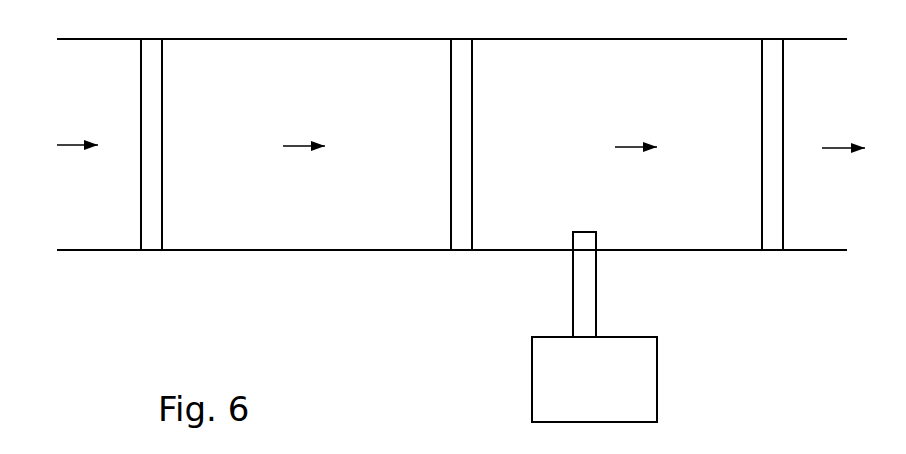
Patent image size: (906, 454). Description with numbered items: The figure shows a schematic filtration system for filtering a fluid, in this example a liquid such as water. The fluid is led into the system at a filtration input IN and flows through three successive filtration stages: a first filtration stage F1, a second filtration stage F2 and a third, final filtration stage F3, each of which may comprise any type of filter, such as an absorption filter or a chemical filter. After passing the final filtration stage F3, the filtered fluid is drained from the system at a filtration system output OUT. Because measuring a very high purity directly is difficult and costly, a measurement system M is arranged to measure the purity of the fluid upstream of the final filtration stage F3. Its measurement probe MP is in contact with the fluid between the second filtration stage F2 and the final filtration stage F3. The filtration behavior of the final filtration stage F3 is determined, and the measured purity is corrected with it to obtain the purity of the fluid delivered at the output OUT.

The filtration input IN is at (66, 108).
The filtration system output OUT is at (848, 111).
The first filtration stage F1 is at (152, 176).
The second filtration stage F2 is at (461, 176).
The final filtration stage F3 is at (774, 176).
The measurement probe MP is at (621, 284).
The measurement system M is at (594, 379).